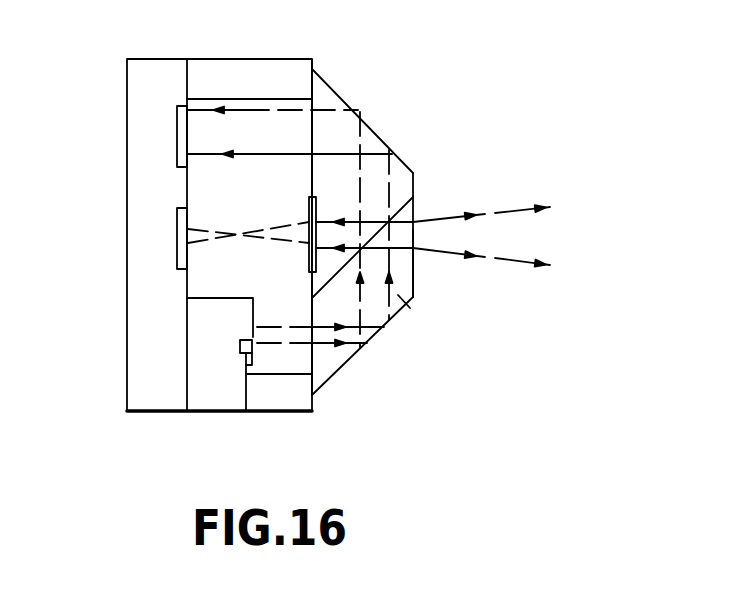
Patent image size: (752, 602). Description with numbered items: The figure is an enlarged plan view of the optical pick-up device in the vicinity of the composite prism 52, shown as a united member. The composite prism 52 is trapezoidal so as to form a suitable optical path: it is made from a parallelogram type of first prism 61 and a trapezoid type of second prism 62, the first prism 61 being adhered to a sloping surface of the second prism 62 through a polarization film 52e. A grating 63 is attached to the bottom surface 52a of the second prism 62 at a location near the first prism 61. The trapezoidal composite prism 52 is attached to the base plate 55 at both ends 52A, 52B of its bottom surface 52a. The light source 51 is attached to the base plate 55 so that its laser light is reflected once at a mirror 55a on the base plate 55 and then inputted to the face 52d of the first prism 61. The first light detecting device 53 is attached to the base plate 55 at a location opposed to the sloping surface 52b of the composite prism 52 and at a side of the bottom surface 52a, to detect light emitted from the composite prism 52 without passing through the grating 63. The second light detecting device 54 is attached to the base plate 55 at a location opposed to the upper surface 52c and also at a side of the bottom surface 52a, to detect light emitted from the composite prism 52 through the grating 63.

The light source 51 is at (253, 357).
The composite prism 52 is at (369, 233).
The bottom surface 52a is at (312, 182).
The end of bottom surface 52A is at (312, 78).
The sloping surface 52b is at (340, 96).
The end of bottom surface 52B is at (312, 382).
The upper surface 52c is at (413, 265).
The face 52d is at (352, 360).
The polarization film 52e is at (410, 208).
The first light detecting device 53 is at (180, 135).
The second light detecting device 54 is at (190, 243).
The base plate 55 is at (140, 389).
The mirror 55a is at (247, 340).
The first prism 61 is at (410, 304).
The second prism 62 is at (402, 178).
The grating 63 is at (310, 212).